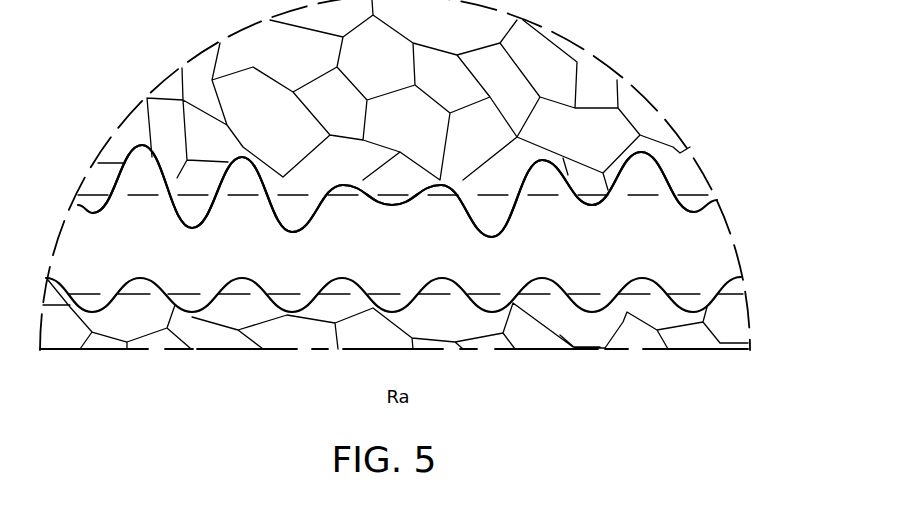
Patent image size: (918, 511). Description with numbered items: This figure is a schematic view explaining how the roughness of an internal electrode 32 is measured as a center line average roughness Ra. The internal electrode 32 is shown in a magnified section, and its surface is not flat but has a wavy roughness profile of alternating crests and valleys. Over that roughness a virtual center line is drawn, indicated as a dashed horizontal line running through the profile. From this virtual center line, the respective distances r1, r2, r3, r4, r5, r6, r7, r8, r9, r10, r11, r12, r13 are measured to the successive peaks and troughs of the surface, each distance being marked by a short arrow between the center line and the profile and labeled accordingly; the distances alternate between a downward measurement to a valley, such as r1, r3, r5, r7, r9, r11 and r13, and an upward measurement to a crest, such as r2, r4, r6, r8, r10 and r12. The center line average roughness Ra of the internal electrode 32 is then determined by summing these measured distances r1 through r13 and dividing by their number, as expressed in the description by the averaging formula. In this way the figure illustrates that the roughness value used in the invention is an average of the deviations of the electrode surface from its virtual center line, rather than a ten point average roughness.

The internal electrode 32 is at (713, 238).
The distance r1 is at (93, 175).
The distance r2 is at (142, 125).
The distance r3 is at (192, 173).
The distance r4 is at (242, 140).
The distance r5 is at (292, 175).
The distance r6 is at (343, 167).
The distance r7 is at (392, 177).
The distance r8 is at (441, 167).
The distance r9 is at (492, 177).
The distance r10 is at (542, 140).
The distance r11 is at (592, 178).
The distance r12 is at (641, 135).
The distance r13 is at (694, 177).